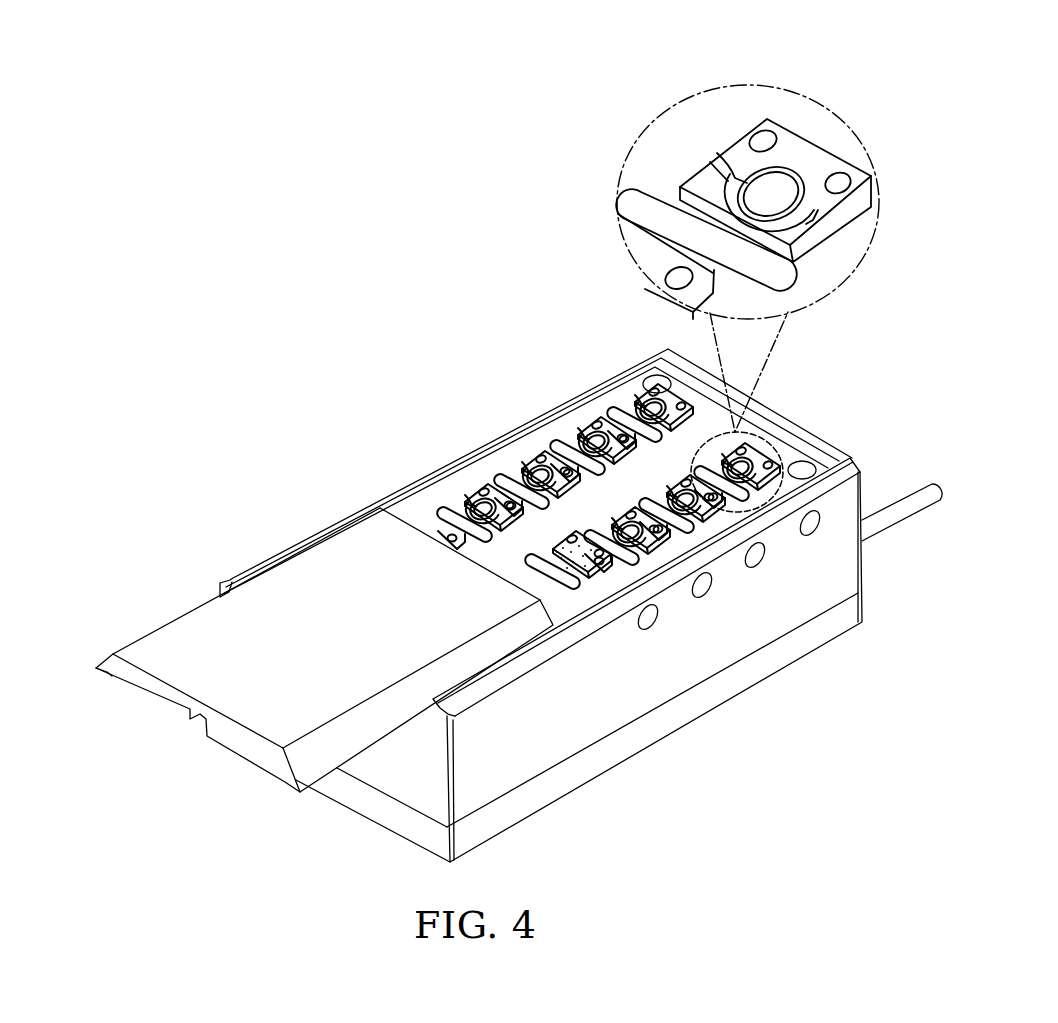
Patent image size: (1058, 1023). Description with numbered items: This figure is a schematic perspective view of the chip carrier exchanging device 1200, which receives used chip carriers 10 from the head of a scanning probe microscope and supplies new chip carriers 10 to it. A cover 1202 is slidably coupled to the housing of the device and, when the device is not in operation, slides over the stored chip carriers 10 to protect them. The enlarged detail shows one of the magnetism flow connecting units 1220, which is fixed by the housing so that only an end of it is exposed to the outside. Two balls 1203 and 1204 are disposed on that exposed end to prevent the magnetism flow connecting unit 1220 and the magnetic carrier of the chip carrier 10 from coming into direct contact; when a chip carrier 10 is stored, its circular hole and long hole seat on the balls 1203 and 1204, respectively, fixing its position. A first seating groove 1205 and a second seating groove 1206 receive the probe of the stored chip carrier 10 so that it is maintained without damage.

The chip carrier 10 is at (598, 563).
The chip carrier exchanging device 1200 is at (222, 293).
The cover 1202 is at (175, 670).
The ball 1203 is at (764, 136).
The ball 1204 is at (842, 182).
The first seating groove 1205 is at (648, 222).
The second seating groove 1206 is at (712, 273).
The magnetism flow connecting unit 1220 is at (768, 193).